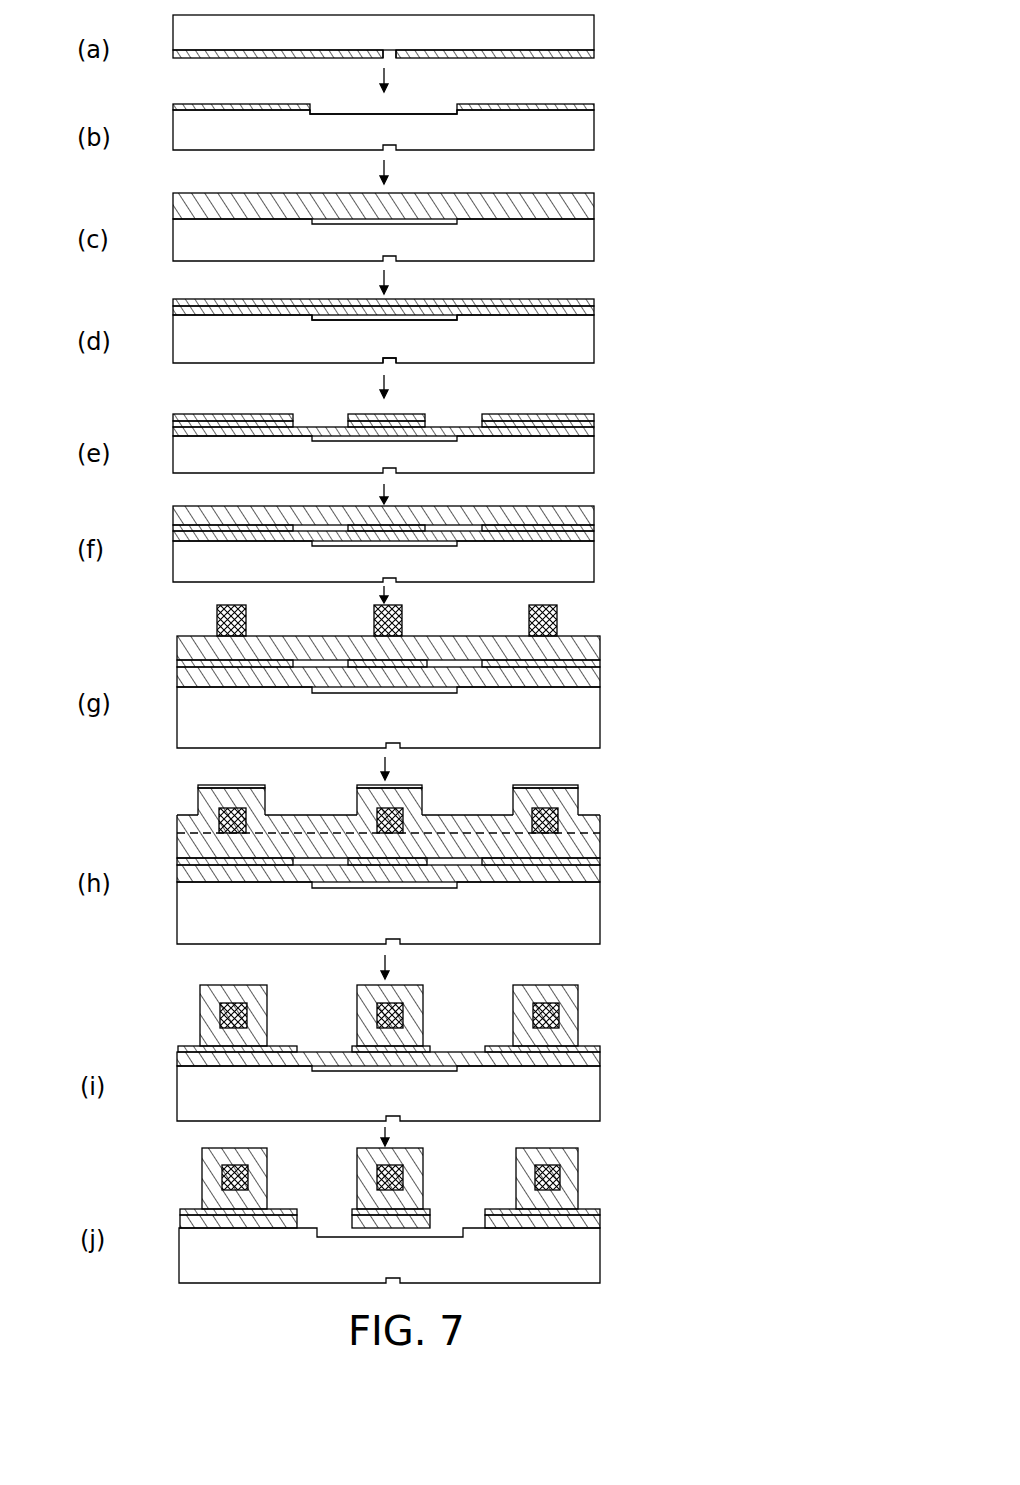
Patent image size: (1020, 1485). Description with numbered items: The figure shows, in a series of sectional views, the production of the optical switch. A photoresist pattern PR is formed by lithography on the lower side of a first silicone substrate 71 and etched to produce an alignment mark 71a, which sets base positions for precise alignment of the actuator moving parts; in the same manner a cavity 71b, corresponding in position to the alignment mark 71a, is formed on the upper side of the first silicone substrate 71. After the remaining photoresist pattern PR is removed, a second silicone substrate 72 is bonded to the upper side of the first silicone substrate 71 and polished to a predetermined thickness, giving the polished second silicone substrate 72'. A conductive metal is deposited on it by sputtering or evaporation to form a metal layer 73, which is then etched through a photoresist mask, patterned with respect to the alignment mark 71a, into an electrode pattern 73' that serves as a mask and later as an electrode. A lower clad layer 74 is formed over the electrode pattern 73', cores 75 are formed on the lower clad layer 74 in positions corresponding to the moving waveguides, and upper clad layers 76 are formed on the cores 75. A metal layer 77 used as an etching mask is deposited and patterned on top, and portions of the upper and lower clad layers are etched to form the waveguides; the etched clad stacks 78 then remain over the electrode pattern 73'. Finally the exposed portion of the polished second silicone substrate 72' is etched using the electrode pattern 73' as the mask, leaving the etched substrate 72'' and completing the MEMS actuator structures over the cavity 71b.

The first silicone substrate 71 is at (594, 22).
The alignment mark 71a is at (390, 58).
The cavity 71b is at (344, 108).
The photoresist pattern PR is at (594, 55).
The second silicone substrate 72 is at (422, 205).
The polished second silicone substrate 72' is at (446, 697).
The etched polished second silicone substrate 72'' is at (447, 1233).
The metal layer 73 is at (420, 301).
The electrode pattern 73' is at (432, 822).
The lower clad layer 74 is at (594, 510).
The cores 75 is at (557, 615).
The upper clad layers 76 is at (578, 805).
The metal layer used as etching mask 77 is at (578, 787).
The conductive pattern 78 is at (578, 1030).